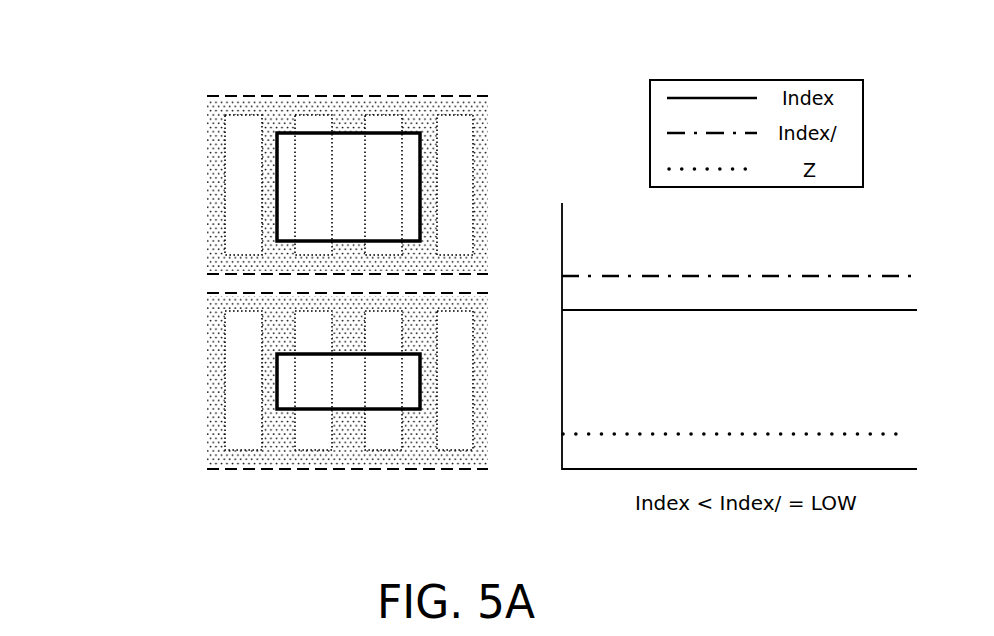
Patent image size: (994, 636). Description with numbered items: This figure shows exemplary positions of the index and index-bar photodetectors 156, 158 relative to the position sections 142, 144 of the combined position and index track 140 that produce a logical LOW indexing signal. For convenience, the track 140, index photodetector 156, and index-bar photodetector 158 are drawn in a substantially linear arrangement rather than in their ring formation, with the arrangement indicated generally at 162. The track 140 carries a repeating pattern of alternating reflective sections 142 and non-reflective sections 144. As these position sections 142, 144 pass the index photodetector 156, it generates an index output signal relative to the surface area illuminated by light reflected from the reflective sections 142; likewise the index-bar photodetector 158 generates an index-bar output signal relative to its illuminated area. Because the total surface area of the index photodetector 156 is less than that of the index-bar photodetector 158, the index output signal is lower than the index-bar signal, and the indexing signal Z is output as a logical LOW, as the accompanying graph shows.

The memory cell layout 162 is at (168, 36).
The combined position and index track 140 is at (478, 90).
The reflective sections 142 is at (381, 127).
The non-reflective sections 144 is at (417, 126).
The index photodetector 156 is at (411, 398).
The index-bar photodetector 158 is at (314, 151).